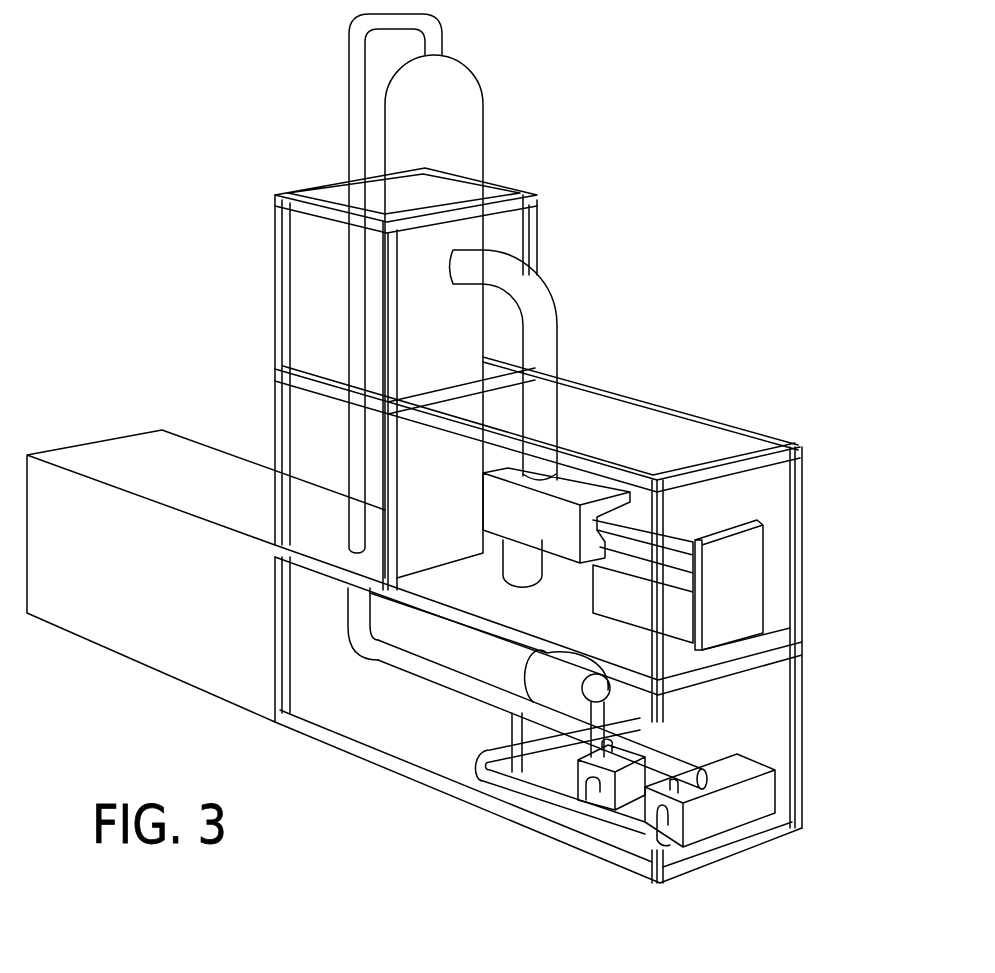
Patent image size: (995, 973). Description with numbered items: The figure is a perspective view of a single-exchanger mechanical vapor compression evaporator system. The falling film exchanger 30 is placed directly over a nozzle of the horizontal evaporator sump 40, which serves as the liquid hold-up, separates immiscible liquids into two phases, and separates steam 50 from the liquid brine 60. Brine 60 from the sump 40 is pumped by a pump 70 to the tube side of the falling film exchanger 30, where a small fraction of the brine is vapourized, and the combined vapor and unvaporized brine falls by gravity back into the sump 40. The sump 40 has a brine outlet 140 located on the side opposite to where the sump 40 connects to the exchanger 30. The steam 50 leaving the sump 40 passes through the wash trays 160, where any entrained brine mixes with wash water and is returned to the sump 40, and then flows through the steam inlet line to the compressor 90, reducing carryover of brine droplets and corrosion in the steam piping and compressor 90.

The falling film exchanger 30 is at (468, 95).
The brine 60 is at (355, 65).
The steam 50 is at (545, 305).
The compressor 90 is at (577, 487).
The wash trays 160 is at (530, 582).
The evaporator sump 40 is at (442, 658).
The brine outlet 140 is at (555, 793).
The pump 70 is at (735, 772).